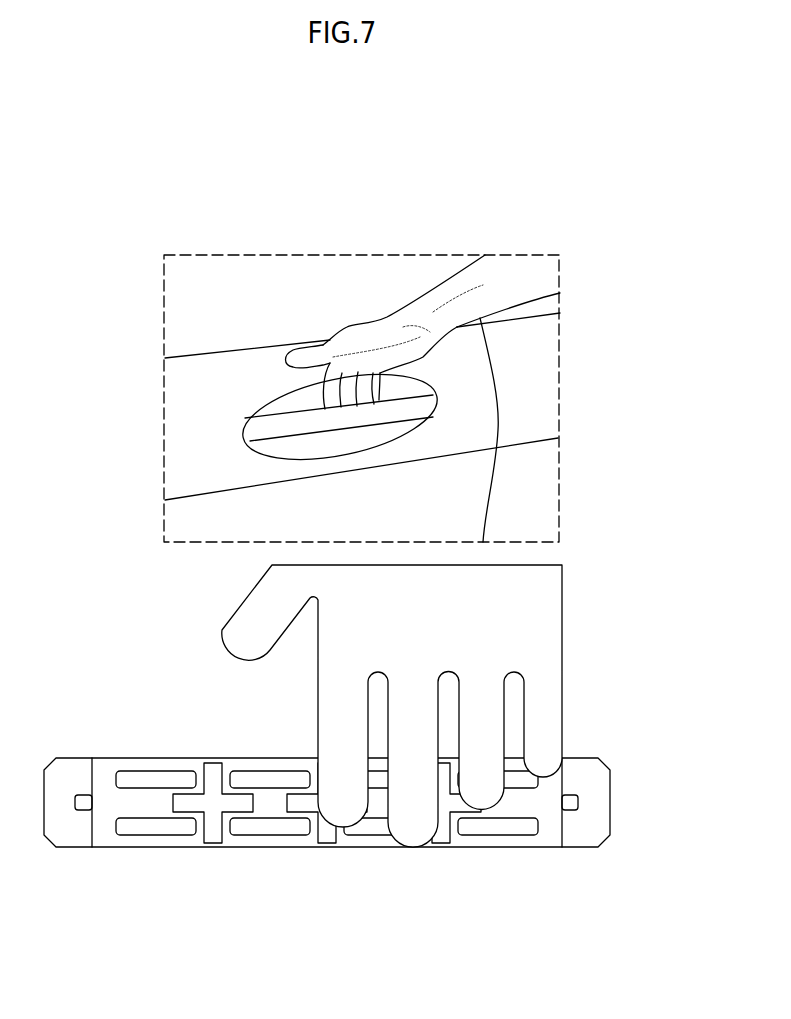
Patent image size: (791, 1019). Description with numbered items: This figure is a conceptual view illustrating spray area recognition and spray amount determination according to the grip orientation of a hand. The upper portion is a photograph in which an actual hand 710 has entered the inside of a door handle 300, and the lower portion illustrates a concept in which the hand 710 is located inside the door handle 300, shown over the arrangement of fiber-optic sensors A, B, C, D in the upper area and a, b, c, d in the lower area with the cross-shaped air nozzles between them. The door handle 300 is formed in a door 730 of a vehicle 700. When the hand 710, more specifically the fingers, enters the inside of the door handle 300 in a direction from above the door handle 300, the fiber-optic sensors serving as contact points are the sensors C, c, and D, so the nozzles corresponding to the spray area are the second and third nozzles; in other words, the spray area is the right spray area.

The vehicle 700 is at (530, 390).
The hand 710 is at (360, 337).
The door handle 300 is at (270, 427).
The door 730 is at (358, 440).